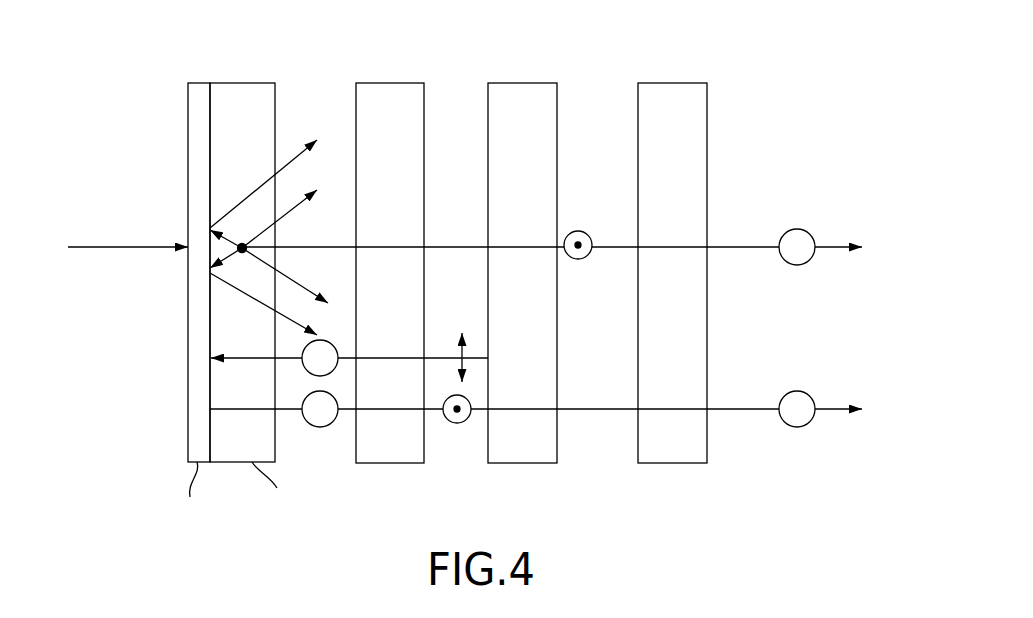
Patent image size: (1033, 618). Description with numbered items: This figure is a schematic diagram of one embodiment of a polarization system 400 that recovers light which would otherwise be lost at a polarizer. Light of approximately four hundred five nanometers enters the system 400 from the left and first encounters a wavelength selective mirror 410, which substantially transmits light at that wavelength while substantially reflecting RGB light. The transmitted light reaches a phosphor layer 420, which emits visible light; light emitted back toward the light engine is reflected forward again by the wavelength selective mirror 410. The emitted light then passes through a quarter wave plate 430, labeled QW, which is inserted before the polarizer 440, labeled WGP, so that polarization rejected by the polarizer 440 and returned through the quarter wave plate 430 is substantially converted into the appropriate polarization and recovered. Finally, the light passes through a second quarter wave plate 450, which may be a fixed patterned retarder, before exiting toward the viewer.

The polarization system 400 is at (738, 494).
The wavelength selective mirror 410 is at (202, 83).
The phosphor layer 420 is at (250, 83).
The quarter wave plate 430 is at (382, 83).
The polarizer 440 is at (522, 83).
The second quarter wave plate 450 is at (665, 83).